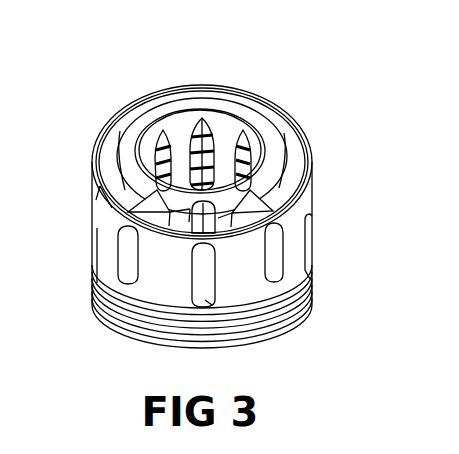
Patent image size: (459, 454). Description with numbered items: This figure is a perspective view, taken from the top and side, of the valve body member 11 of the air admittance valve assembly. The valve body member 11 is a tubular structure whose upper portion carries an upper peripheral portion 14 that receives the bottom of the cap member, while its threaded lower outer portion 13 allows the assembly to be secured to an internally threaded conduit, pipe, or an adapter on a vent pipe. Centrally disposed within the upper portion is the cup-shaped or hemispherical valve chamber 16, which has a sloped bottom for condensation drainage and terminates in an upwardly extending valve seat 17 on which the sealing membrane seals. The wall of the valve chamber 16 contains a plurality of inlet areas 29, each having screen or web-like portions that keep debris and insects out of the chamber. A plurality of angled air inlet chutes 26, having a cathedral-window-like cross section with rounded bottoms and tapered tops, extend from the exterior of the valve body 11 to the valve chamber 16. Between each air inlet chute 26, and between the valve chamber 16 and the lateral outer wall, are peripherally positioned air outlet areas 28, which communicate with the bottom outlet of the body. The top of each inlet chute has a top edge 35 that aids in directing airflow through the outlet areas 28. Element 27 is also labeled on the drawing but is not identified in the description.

The valve body member 11 is at (309, 132).
The threaded lower outer portion 13 is at (316, 278).
The upper peripheral portion 14 is at (100, 133).
The valve chamber 16 is at (217, 117).
The valve seat 17 is at (235, 107).
The air inlet chutes 26 is at (205, 128).
The rib end 27 is at (217, 287).
The air outlet areas 28 is at (132, 128).
The inlet areas 29 is at (243, 133).
The top edge 35 is at (151, 174).